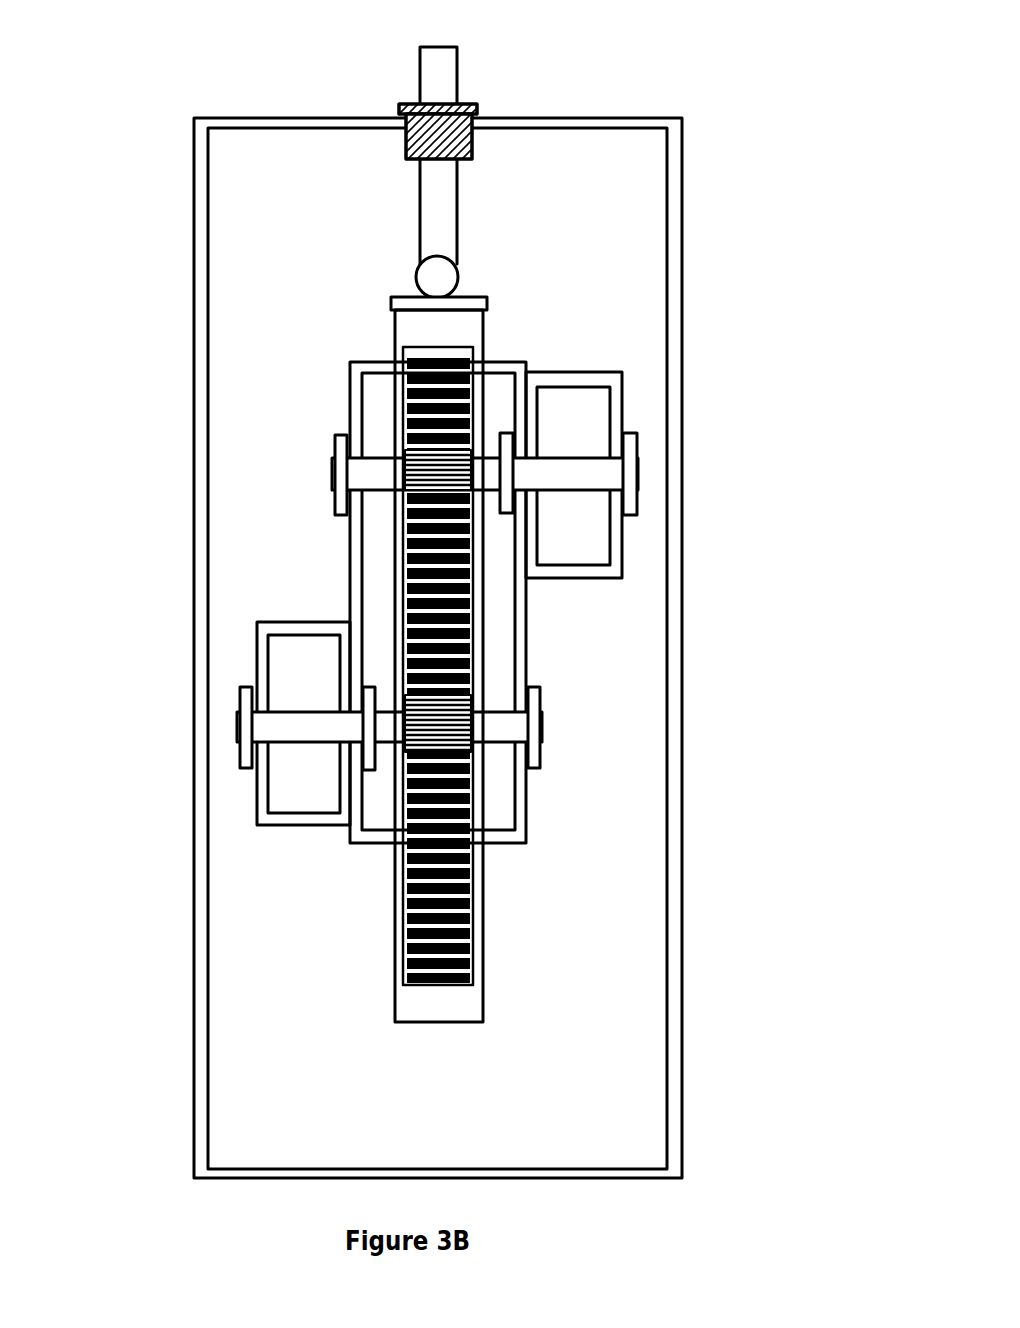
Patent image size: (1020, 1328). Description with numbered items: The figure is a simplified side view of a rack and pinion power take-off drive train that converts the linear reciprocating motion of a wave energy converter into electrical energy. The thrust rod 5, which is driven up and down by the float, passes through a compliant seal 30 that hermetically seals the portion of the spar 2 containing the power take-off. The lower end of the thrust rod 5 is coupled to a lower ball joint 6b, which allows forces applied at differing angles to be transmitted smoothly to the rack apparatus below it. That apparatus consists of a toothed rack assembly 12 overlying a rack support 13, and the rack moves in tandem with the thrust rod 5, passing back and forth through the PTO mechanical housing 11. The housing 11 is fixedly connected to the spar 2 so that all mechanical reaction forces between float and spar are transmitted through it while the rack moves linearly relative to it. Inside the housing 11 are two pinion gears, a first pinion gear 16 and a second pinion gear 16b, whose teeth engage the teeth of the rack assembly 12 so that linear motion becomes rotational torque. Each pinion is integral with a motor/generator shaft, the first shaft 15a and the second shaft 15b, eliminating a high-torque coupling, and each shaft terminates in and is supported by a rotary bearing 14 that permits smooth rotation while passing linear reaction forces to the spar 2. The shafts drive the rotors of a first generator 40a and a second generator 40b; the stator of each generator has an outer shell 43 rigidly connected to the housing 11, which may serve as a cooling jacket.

The spar 2 is at (682, 455).
The thrust rod 5 is at (433, 89).
The compliant seal 30 is at (437, 138).
The lower ball joint 6b is at (415, 283).
The PTO mechanical housing 11 is at (518, 363).
The rack assembly 12 is at (443, 923).
The rack support 13 is at (438, 713).
The rotary bearing 14 is at (637, 500).
The motor/generator shaft 15a is at (571, 534).
The motor/generator shaft 15b is at (502, 727).
The pinion gear 16 is at (425, 487).
The second pinion gear 16b is at (437, 727).
The first generator 40a is at (670, 536).
The second generator 40b is at (305, 823).
The outer shell 43 is at (570, 572).